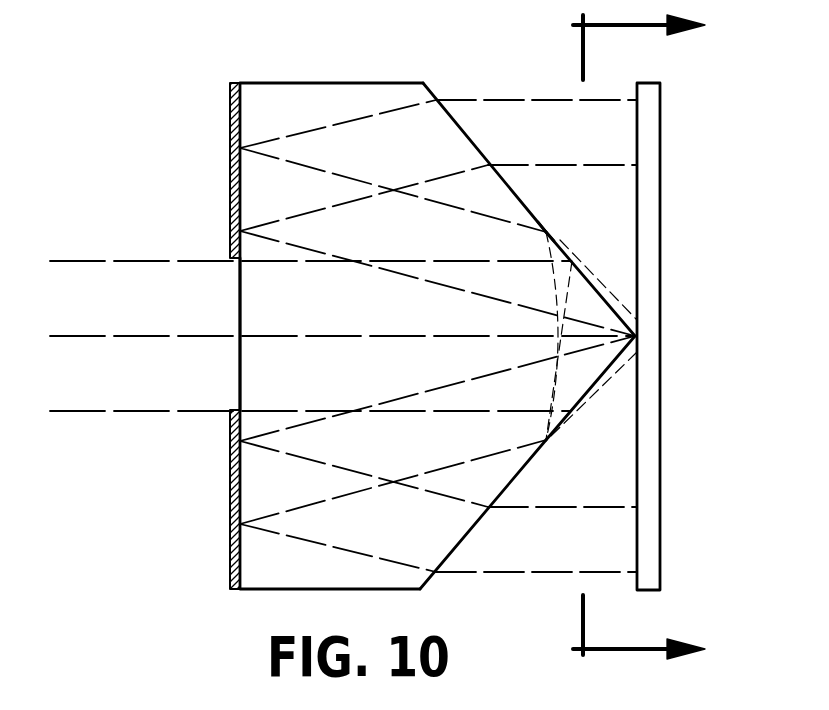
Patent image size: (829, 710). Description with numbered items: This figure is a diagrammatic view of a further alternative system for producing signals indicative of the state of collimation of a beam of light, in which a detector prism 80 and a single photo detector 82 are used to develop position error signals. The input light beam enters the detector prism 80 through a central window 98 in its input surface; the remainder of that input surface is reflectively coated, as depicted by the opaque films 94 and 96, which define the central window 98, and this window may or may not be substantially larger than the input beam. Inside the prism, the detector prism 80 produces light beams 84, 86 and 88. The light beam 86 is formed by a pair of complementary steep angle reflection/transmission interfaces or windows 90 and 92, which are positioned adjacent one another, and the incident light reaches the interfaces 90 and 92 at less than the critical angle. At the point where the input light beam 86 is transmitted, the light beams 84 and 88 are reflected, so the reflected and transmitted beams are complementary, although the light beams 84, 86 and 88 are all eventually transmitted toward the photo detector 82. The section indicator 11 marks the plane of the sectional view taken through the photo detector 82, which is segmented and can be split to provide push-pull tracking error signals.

The detector prism 80 is at (308, 82).
The photo detector 82 is at (660, 291).
The light beam 84 is at (541, 99).
The light beam 86 is at (611, 295).
The light beam 88 is at (520, 505).
The reflection/transmission interface 90 is at (546, 230).
The reflection/transmission interface 92 is at (572, 406).
The opaque film 94 is at (240, 148).
The opaque film 96 is at (232, 543).
The central window 98 is at (240, 308).
The section line 11- 11 is at (660, 338).